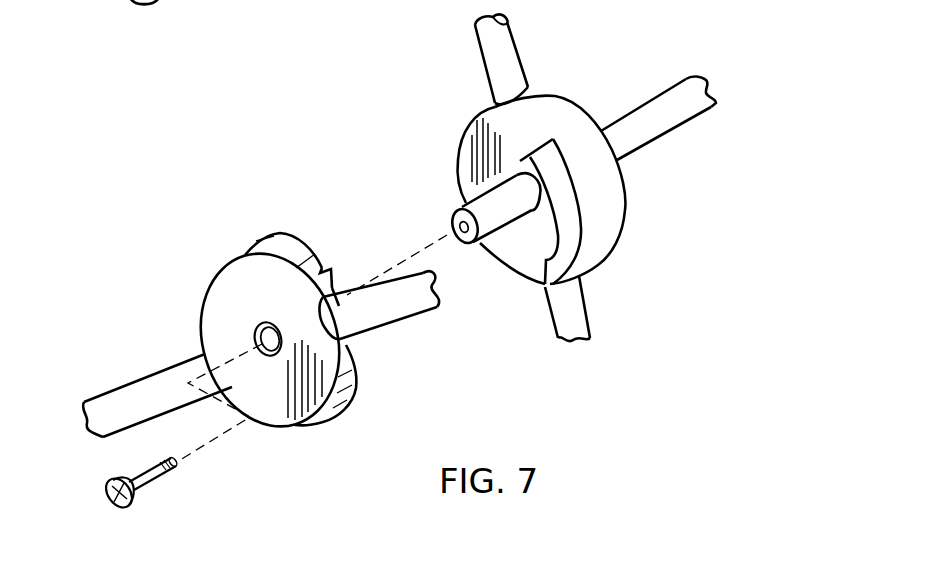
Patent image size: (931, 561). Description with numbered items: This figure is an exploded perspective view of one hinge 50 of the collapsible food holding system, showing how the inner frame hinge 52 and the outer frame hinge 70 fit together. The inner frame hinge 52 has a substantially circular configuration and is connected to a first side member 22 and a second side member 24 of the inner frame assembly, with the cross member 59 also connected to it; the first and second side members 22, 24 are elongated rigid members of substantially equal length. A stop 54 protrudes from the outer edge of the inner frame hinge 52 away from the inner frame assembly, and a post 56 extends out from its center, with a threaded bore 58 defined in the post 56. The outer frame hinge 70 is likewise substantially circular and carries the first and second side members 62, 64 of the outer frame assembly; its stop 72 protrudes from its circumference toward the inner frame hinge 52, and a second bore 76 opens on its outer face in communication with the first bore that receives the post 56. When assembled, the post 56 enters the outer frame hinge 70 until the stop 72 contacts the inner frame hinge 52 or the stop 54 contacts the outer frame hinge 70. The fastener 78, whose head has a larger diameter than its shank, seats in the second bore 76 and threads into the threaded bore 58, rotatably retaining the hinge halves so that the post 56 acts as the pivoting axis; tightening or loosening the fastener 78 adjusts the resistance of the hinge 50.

The first side member 22 is at (590, 310).
The second side member 24 is at (477, 44).
The hinge 50 is at (298, 148).
The inner frame hinge 52 is at (456, 142).
The stop 54 is at (578, 218).
The post 56 is at (458, 207).
The threaded bore 58 is at (452, 226).
The cross member 59 is at (675, 80).
The first side member 62 is at (127, 385).
The second side member 64 is at (408, 320).
The outer frame hinge 70 is at (209, 272).
The stop 72 is at (308, 243).
The second bore 76 is at (253, 323).
The fastener 78 is at (108, 497).